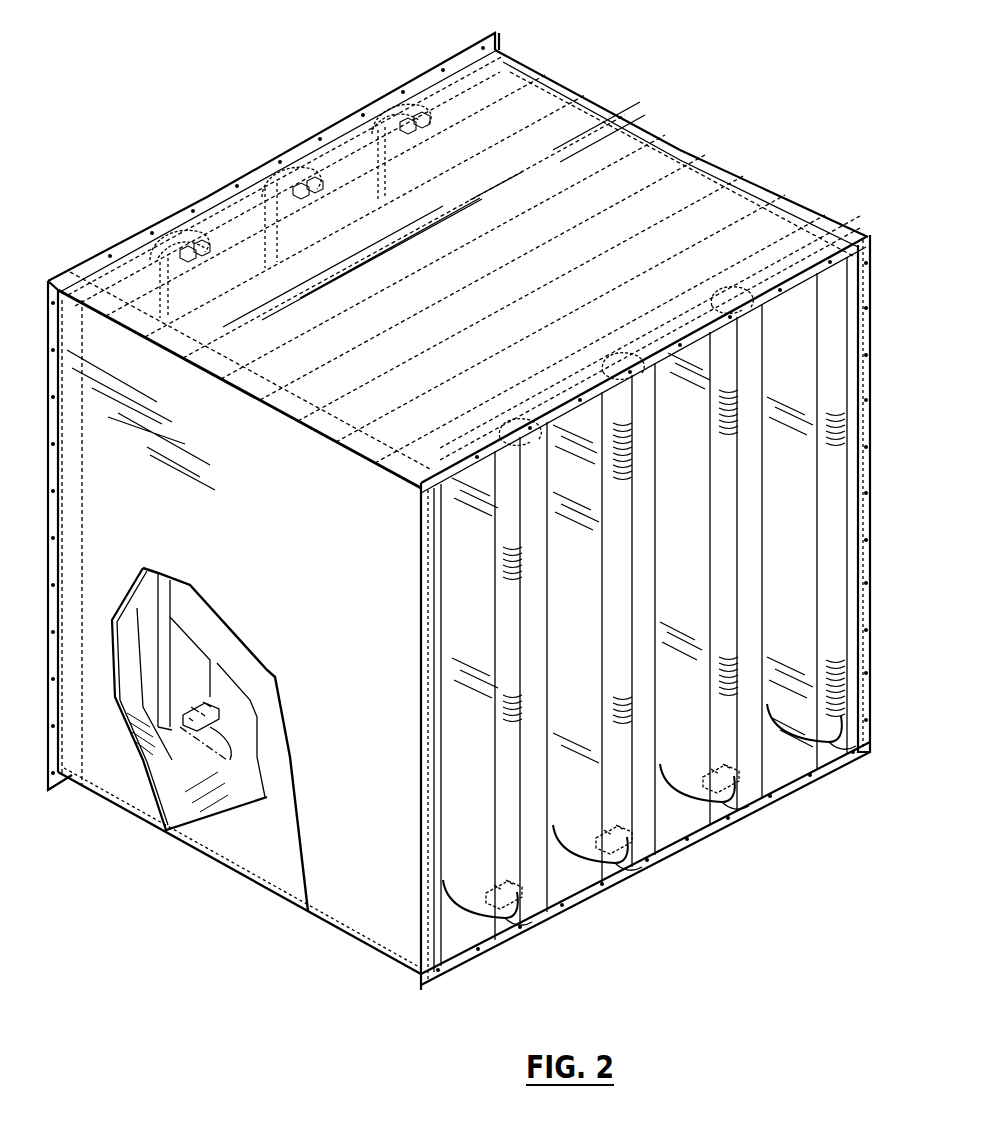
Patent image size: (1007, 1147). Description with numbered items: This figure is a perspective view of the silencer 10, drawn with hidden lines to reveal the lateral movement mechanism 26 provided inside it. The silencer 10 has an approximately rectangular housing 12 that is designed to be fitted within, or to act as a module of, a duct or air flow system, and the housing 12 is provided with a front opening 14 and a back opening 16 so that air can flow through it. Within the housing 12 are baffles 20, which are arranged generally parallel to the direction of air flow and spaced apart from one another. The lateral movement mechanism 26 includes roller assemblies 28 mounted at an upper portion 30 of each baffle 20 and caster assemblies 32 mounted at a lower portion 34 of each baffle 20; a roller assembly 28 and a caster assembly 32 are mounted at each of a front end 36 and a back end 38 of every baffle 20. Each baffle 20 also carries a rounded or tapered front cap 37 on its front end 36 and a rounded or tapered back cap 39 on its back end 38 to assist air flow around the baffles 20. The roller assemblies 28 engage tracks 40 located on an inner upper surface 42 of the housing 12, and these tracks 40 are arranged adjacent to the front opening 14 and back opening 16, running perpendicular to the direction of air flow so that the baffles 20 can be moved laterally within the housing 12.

The silencer 10 is at (243, 920).
The housing 12 is at (659, 118).
The front opening 14 is at (710, 920).
The back opening 16 is at (100, 232).
The baffles 20 is at (663, 537).
The lateral movement mechanism 26 is at (500, 133).
The roller assemblies 28 is at (400, 118).
The upper portion 30 is at (592, 222).
The caster assemblies 32 is at (210, 723).
The lower portion 34 is at (687, 797).
The front end 36 is at (753, 760).
The front cap 37 is at (650, 630).
The back end 38 is at (405, 108).
The back cap 39 is at (405, 120).
The tracks 40 is at (512, 108).
The inner upper surface 42 is at (662, 372).